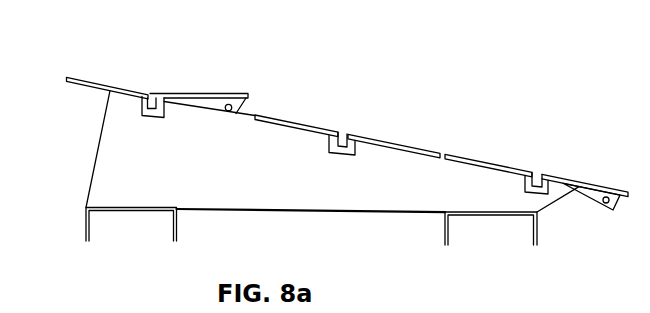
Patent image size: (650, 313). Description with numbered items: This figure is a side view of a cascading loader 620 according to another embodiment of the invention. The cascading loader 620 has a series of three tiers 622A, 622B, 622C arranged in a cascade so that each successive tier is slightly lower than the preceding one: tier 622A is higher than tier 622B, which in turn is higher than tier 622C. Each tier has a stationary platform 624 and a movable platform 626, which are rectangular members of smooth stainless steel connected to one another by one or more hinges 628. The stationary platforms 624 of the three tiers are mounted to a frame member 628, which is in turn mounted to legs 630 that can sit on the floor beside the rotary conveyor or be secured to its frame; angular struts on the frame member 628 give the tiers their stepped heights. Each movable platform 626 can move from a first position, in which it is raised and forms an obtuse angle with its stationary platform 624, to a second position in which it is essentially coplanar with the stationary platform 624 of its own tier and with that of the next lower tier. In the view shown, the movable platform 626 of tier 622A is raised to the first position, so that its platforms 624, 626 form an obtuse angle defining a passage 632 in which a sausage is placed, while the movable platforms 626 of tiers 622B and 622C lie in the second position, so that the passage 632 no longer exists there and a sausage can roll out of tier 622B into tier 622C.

The cascading loader 620 is at (325, 112).
The first tier 622A is at (155, 76).
The second tier 622B is at (343, 124).
The third tier 622C is at (538, 159).
The stationary platform 624 is at (90, 88).
The movable platform 626 is at (230, 92).
The frame member 628 is at (100, 180).
The legs 630 is at (275, 210).
The passage 632 is at (107, 75).